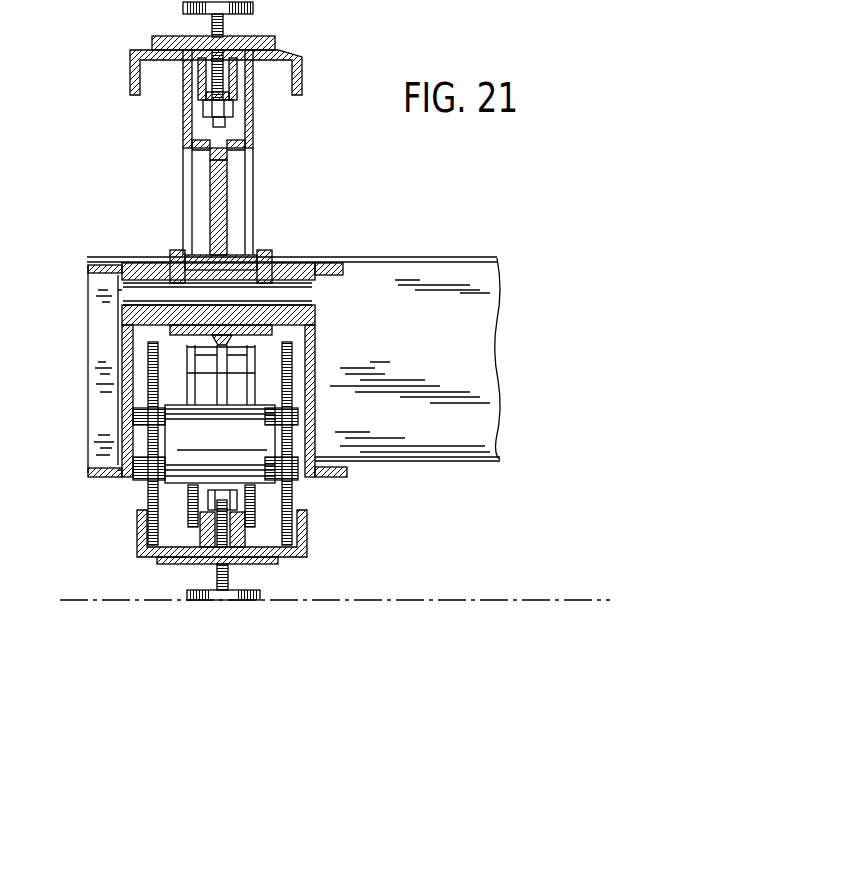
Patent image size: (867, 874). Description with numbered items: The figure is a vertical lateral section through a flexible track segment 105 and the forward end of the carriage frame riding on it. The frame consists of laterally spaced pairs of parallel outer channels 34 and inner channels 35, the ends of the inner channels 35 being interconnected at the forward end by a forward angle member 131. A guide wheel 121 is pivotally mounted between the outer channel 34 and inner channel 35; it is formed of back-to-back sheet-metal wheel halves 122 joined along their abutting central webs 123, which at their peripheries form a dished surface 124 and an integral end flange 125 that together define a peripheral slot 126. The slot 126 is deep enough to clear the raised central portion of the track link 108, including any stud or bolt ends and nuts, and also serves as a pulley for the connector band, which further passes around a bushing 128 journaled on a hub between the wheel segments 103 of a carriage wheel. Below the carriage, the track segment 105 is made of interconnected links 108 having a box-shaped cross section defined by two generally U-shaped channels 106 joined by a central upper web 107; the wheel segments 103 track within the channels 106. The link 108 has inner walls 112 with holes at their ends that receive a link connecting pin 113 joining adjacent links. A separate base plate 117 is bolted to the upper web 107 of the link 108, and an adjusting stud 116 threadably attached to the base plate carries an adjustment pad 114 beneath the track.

The link connecting pin 113 is at (238, 56).
The link 108 is at (131, 78).
The end flange 125 is at (253, 96).
The peripheral slot 126 is at (203, 132).
The guide wheel 121 is at (180, 165).
The dished surface 124 is at (240, 154).
The central web 123 is at (213, 216).
The wheel half 122 is at (240, 217).
The forward angle member 131 is at (397, 260).
The outer channel 34 is at (123, 413).
The inner channel 35 is at (313, 340).
The wheel segment 103 is at (147, 362).
The bushing 128 is at (258, 440).
The central upper web 107 is at (200, 527).
The inner wall 112 is at (258, 534).
The U-shaped channel 106 is at (170, 532).
The base plate 117 is at (268, 559).
The flexible track segment 105 is at (135, 561).
The adjusting stud 116 is at (217, 567).
The adjustment pad 114 is at (240, 600).